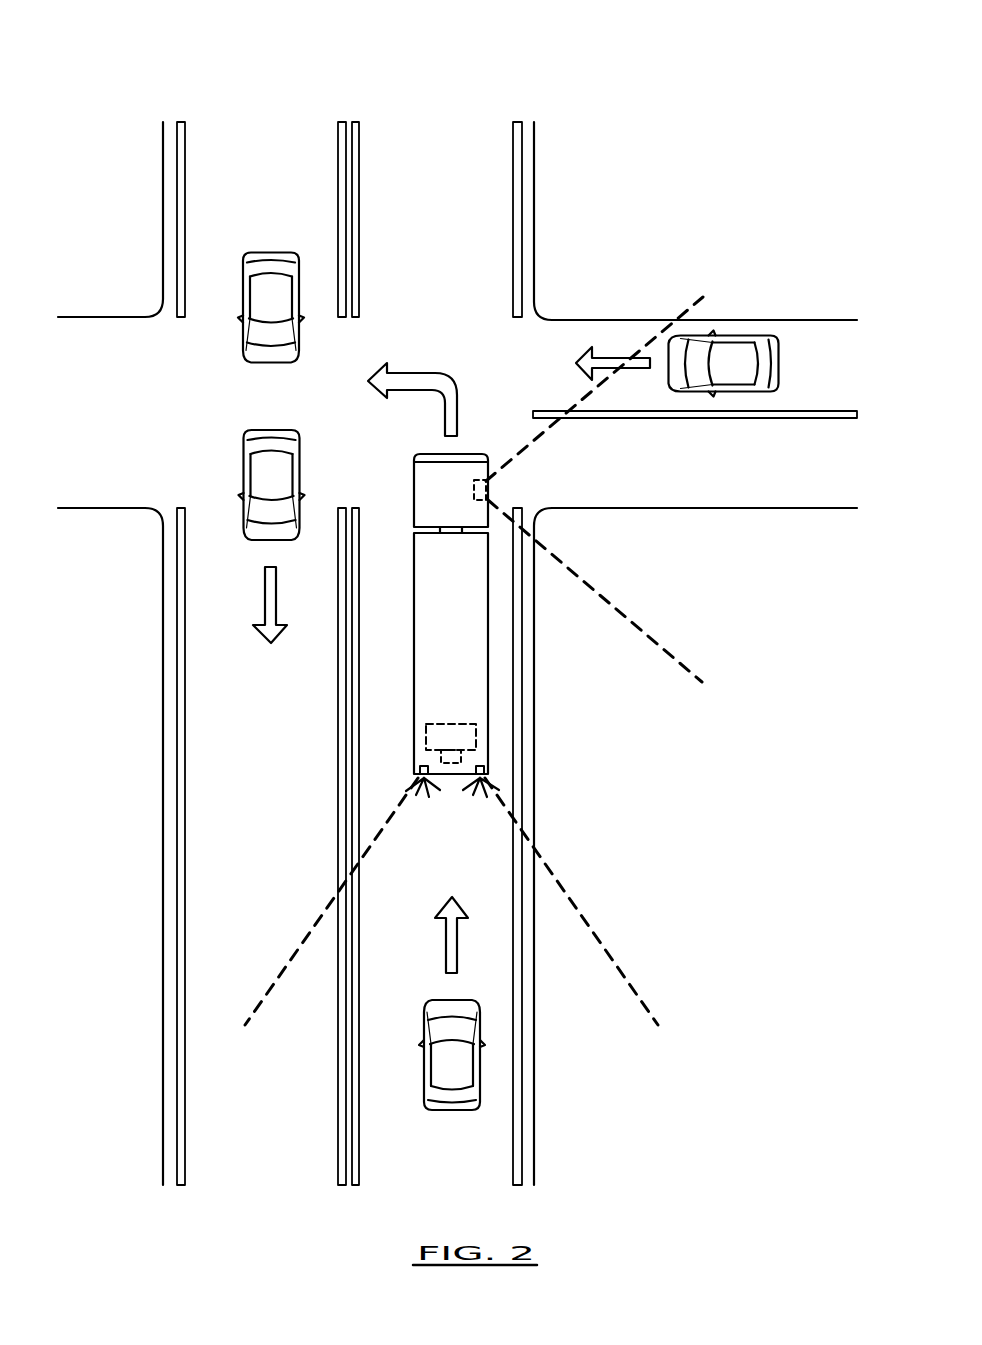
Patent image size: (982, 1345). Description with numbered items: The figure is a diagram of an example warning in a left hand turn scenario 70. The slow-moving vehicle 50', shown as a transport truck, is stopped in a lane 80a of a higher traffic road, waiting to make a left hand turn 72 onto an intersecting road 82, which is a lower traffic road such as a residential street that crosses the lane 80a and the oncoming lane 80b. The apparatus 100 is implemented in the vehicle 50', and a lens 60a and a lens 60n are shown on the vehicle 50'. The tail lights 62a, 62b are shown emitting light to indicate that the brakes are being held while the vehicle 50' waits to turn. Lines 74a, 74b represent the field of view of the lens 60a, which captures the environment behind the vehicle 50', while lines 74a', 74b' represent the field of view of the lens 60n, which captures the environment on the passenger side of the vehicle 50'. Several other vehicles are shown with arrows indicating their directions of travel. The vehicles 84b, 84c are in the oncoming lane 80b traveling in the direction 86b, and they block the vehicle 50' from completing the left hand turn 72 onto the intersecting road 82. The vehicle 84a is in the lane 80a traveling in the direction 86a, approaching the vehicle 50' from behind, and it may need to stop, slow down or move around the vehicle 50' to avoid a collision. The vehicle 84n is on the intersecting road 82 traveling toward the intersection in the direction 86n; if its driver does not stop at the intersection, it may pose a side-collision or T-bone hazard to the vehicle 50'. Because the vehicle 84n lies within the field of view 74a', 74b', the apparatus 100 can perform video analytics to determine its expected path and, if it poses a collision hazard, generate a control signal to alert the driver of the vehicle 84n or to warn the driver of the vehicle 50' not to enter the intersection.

The left hand turn scenario 70 is at (362, 52).
The intersecting road 82 is at (120, 424).
The lane 80a is at (455, 162).
The oncoming lane 80b is at (288, 161).
The vehicle 84a is at (450, 1112).
The vehicle 84b is at (270, 428).
The vehicle 84c is at (270, 253).
The vehicle 84n is at (780, 372).
The arrow 86a is at (446, 940).
The arrow 86b is at (265, 600).
The arrow 86n is at (585, 362).
The left hand turn 72 is at (416, 372).
The slow-moving vehicle 50' is at (476, 633).
The lens 60n is at (474, 490).
The lens 60a is at (447, 765).
The tail light 62a is at (422, 766).
The tail light 62b is at (482, 766).
The apparatus 100 is at (455, 724).
The line 74a is at (331, 901).
The line 74b is at (571, 901).
The line 74a' is at (596, 591).
The line 74b' is at (594, 369).